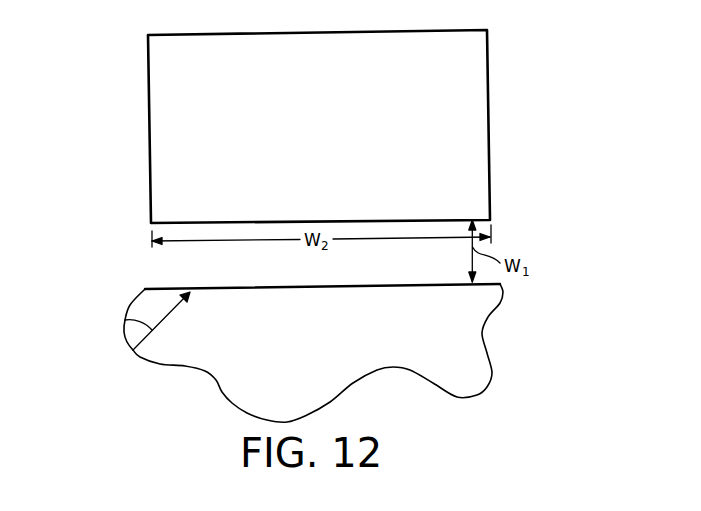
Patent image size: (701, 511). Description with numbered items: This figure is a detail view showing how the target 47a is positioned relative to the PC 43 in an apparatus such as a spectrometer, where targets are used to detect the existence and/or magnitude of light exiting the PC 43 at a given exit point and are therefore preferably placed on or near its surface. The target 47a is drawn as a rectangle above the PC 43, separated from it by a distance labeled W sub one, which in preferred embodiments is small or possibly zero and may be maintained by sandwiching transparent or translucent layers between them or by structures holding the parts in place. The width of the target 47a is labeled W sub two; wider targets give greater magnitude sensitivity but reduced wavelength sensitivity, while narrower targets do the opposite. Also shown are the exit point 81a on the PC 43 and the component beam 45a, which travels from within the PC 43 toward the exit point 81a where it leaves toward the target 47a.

The target 47a is at (329, 134).
The PC 43 is at (331, 340).
The component beam 45a is at (125, 320).
The exit point 81a is at (193, 289).